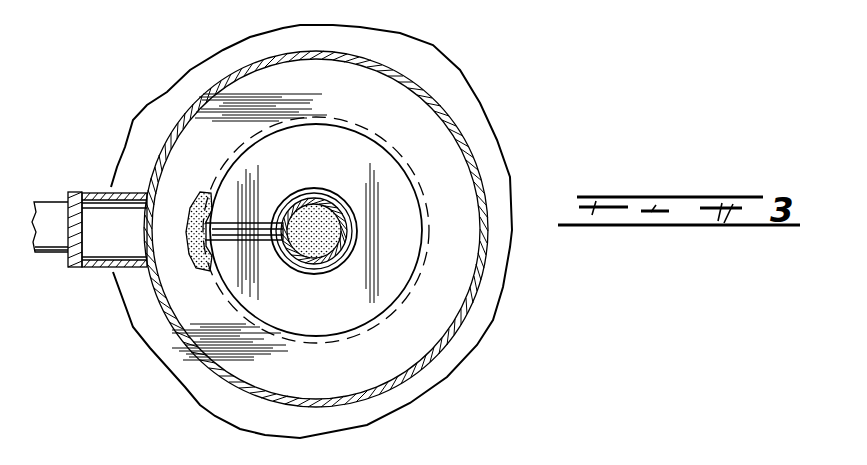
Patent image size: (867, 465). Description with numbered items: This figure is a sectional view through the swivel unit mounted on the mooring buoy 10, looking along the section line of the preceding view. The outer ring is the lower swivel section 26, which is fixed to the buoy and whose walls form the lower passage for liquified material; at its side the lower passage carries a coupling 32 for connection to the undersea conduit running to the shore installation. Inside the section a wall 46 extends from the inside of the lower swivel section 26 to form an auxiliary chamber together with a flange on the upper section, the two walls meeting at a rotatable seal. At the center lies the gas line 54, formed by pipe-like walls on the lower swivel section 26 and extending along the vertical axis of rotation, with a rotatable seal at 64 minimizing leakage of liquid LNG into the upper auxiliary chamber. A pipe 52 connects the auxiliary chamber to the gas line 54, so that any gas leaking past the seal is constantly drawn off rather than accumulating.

The mooring buoy 10 is at (499, 144).
The lower swivel section 26 is at (402, 76).
The wall 46 is at (410, 110).
The pipe 52 is at (250, 228).
The rotatable seal 64 is at (337, 195).
The gas line 54 is at (313, 262).
The coupling 32 is at (93, 270).